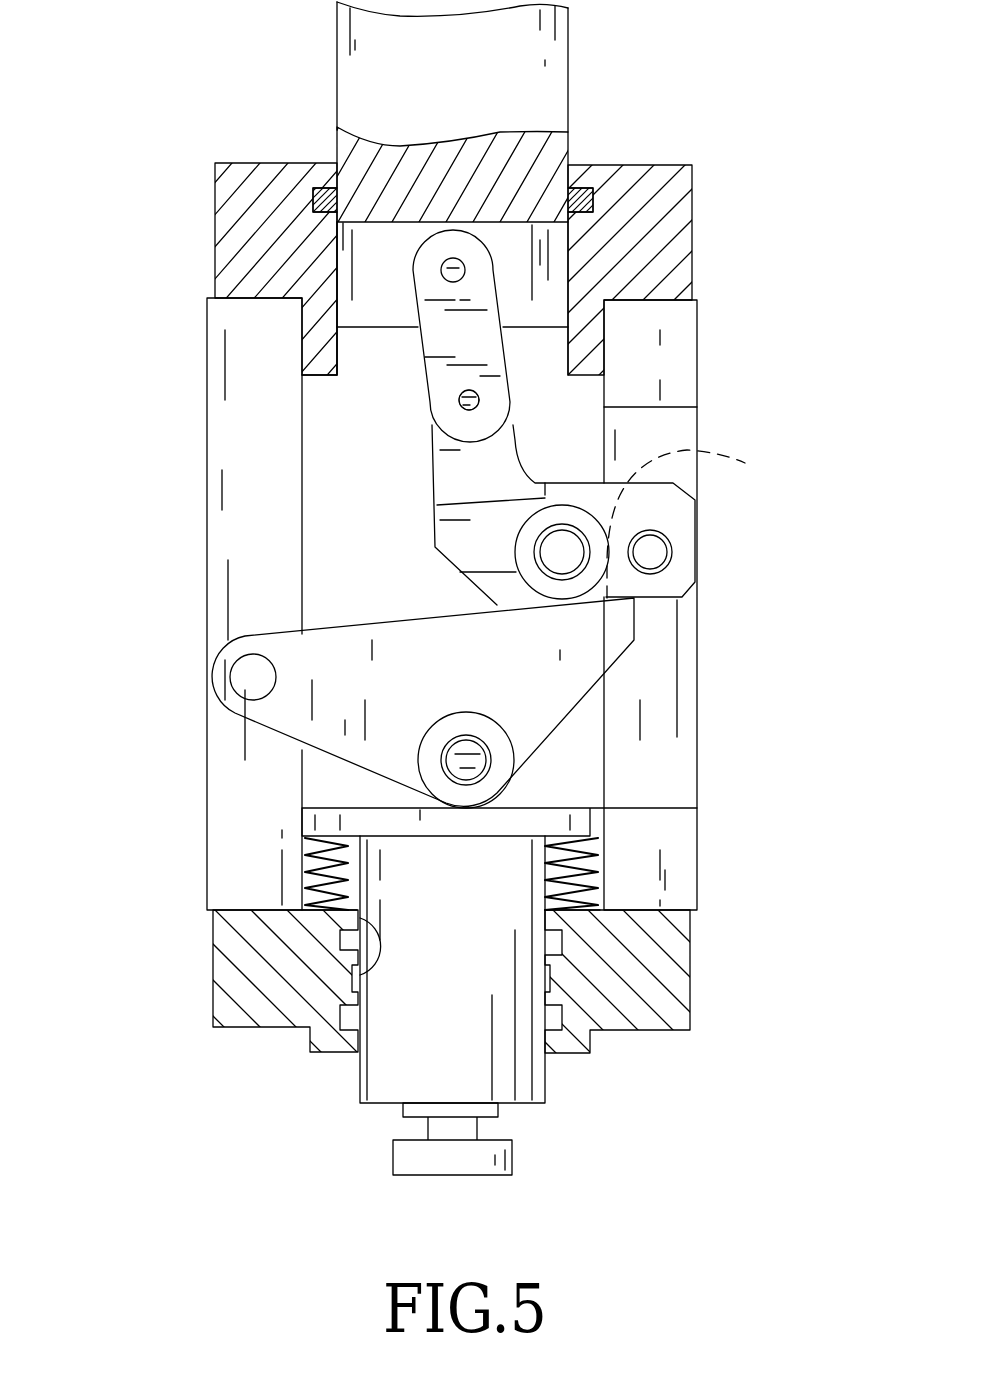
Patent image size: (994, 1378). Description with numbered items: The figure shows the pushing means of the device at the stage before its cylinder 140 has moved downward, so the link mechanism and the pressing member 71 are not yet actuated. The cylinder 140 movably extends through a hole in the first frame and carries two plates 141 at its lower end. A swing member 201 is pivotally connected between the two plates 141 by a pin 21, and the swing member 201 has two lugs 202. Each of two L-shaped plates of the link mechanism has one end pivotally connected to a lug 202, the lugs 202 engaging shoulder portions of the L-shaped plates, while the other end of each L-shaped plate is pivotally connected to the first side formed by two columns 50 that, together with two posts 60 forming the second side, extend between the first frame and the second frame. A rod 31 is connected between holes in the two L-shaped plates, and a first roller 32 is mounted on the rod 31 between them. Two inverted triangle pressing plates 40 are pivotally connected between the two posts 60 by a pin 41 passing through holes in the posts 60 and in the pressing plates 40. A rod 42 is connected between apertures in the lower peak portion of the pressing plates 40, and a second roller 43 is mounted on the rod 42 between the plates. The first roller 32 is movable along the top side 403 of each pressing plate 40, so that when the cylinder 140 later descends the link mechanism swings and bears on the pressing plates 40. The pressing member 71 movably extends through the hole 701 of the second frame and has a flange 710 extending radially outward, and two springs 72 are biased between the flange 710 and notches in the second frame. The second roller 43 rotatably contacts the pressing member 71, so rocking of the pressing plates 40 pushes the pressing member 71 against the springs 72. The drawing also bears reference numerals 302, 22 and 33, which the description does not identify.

The cylinder 140 is at (348, 38).
The pin 21 is at (537, 137).
The swing member 201 is at (427, 260).
The lugs 202 is at (495, 350).
The plates 141 is at (362, 292).
The posts 60 is at (215, 375).
The columns 50 is at (686, 362).
The link hole 302 is at (462, 410).
The pin 22 is at (474, 403).
The first roller 32 is at (535, 548).
The rod 31 is at (548, 565).
The hole 33 is at (652, 554).
The top side 403 is at (711, 522).
The pin 41 is at (240, 678).
The second roller 43 is at (477, 730).
The pressing plates 40 is at (573, 716).
The rod 42 is at (475, 752).
The flange 710 is at (300, 818).
The springs 72 is at (302, 880).
The hole 701 is at (370, 973).
The pressing member 71 is at (355, 1078).